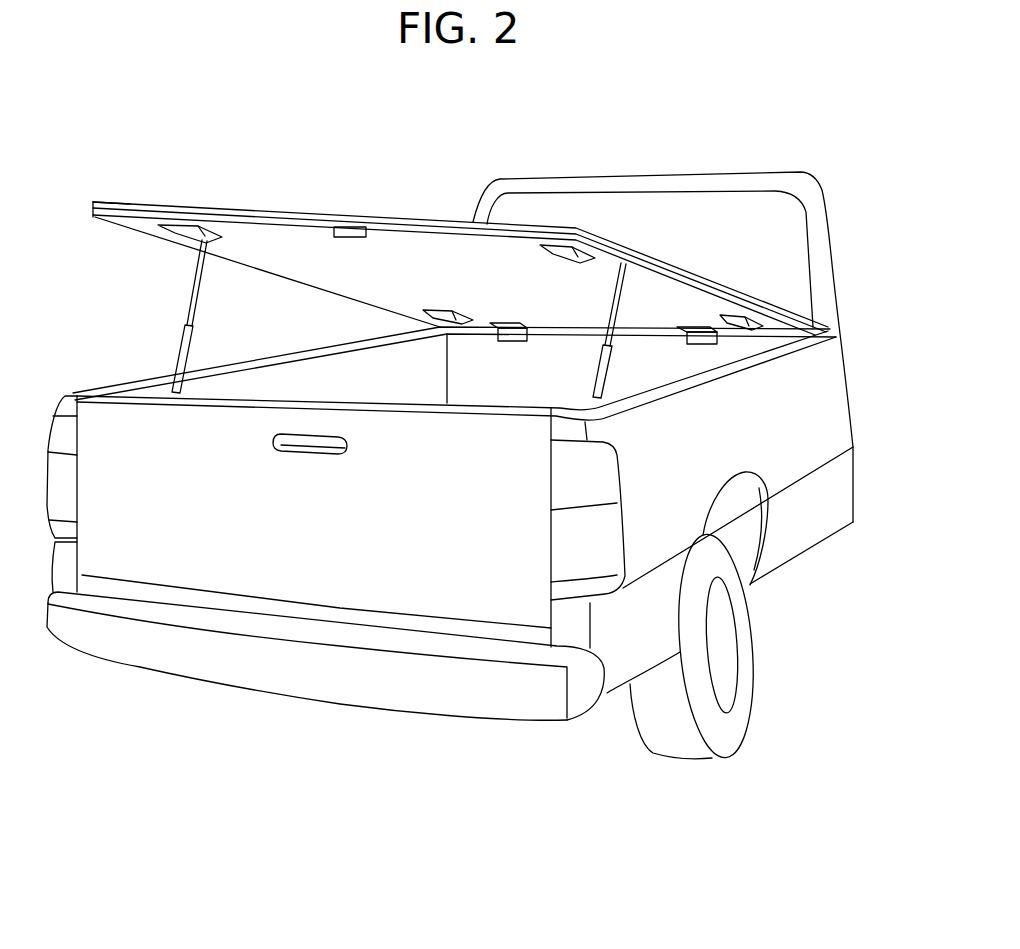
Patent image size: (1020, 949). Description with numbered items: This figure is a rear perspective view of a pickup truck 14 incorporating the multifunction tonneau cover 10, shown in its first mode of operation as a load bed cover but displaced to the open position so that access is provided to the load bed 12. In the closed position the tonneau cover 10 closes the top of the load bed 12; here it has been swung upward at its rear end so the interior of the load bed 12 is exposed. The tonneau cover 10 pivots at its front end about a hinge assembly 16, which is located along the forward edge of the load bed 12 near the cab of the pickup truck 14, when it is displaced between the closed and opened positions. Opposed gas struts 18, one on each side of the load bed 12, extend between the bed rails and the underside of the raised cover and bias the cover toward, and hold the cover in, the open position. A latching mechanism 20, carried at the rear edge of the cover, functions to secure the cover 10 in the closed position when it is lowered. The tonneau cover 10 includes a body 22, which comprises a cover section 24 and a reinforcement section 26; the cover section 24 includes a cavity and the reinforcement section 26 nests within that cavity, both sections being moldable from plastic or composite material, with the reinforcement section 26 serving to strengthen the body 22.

The multifunction tonneau cover 10 is at (212, 143).
The load bed 12 is at (328, 397).
The pickup truck 14 is at (810, 375).
The hinge assembly 16 is at (698, 330).
The gas struts 18 is at (183, 343).
The latching mechanism 20 is at (345, 222).
The body 22 is at (433, 217).
The cover section 24 is at (153, 205).
The reinforcement section 26 is at (358, 270).